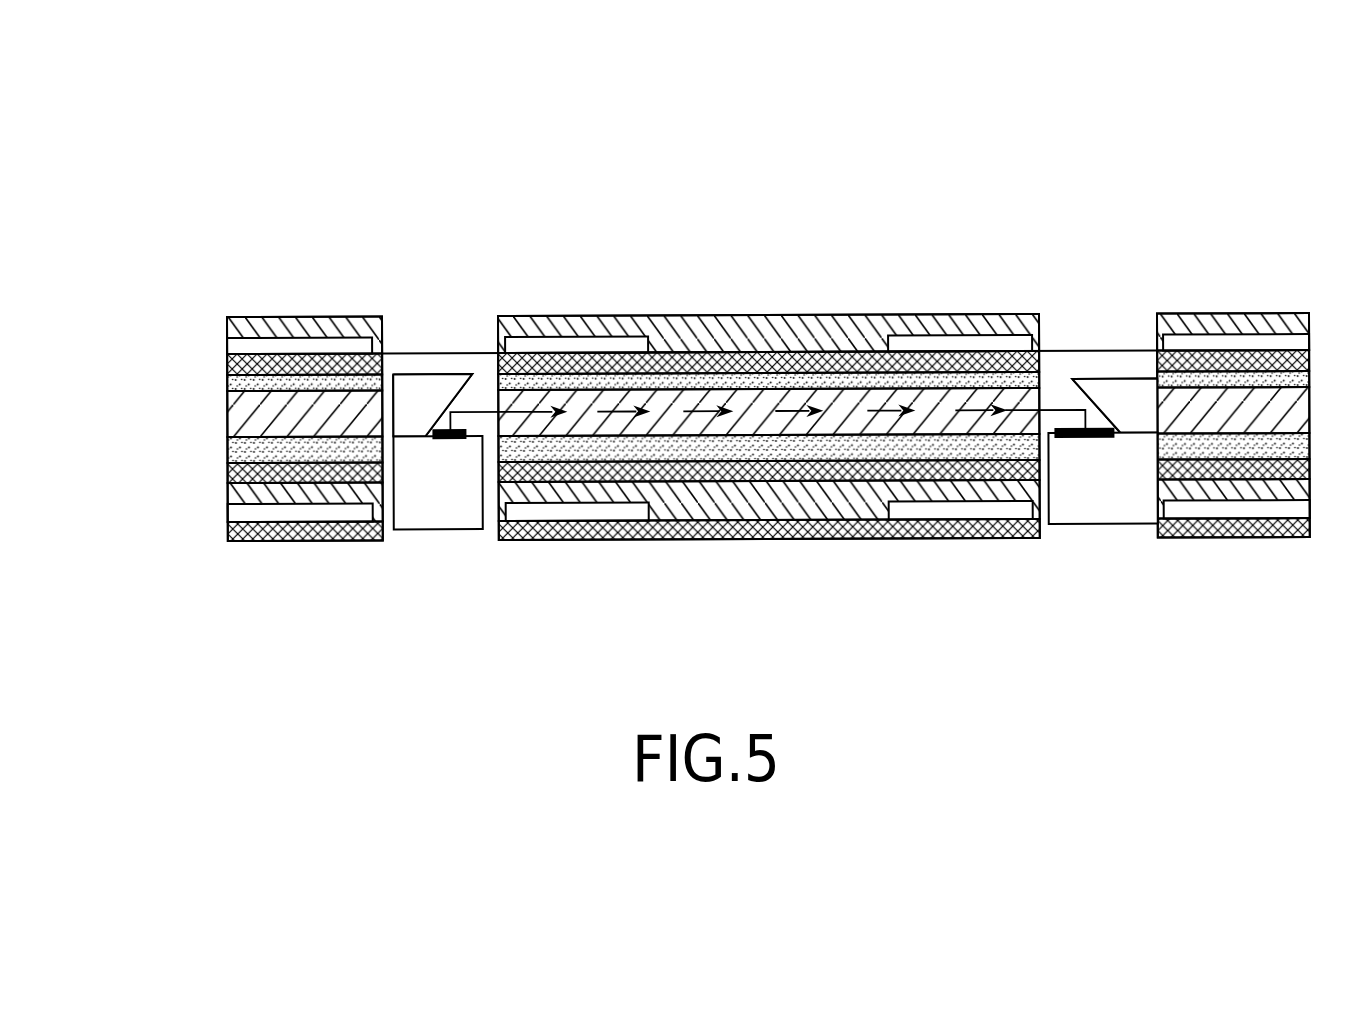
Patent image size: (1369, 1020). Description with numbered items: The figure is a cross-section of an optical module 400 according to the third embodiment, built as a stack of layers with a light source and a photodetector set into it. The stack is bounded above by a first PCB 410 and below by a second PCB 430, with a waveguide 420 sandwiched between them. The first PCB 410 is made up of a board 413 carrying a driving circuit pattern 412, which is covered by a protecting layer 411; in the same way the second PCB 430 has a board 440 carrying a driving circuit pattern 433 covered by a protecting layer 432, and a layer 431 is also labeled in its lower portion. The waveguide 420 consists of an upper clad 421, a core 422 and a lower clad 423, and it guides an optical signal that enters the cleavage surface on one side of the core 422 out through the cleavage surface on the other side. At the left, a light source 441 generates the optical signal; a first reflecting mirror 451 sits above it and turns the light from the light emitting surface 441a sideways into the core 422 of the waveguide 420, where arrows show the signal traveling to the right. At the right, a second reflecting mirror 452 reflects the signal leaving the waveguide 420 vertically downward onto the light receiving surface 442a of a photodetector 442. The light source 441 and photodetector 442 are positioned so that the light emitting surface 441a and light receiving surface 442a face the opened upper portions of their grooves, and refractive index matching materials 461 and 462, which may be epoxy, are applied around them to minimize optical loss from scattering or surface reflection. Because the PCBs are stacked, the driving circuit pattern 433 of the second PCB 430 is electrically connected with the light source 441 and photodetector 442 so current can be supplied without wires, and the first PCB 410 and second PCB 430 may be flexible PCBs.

The optical module 400 is at (755, 118).
The first PCB 410 is at (1315, 317).
The protecting layer 411 is at (227, 323).
The driving circuit pattern 412 is at (227, 349).
The board 413 is at (227, 372).
The waveguide 420 is at (88, 425).
The upper clad 421 is at (227, 382).
The core 422 is at (227, 420).
The lower clad 423 is at (227, 455).
The second PCB 430 is at (1315, 462).
The lower metal layer 431 is at (227, 476).
The protecting layer 432 is at (227, 495).
The driving circuit pattern 433 is at (227, 511).
The board 440 is at (227, 524).
The light source 441 is at (424, 505).
The light emitting surface 441a is at (450, 442).
The photodetector 442 is at (1127, 465).
The light receiving surface 442a is at (1068, 440).
The first reflecting mirror 451 is at (432, 387).
The second reflecting mirror 452 is at (1122, 388).
The refractive index matching material 461 is at (407, 362).
The refractive index matching material 462 is at (1062, 370).